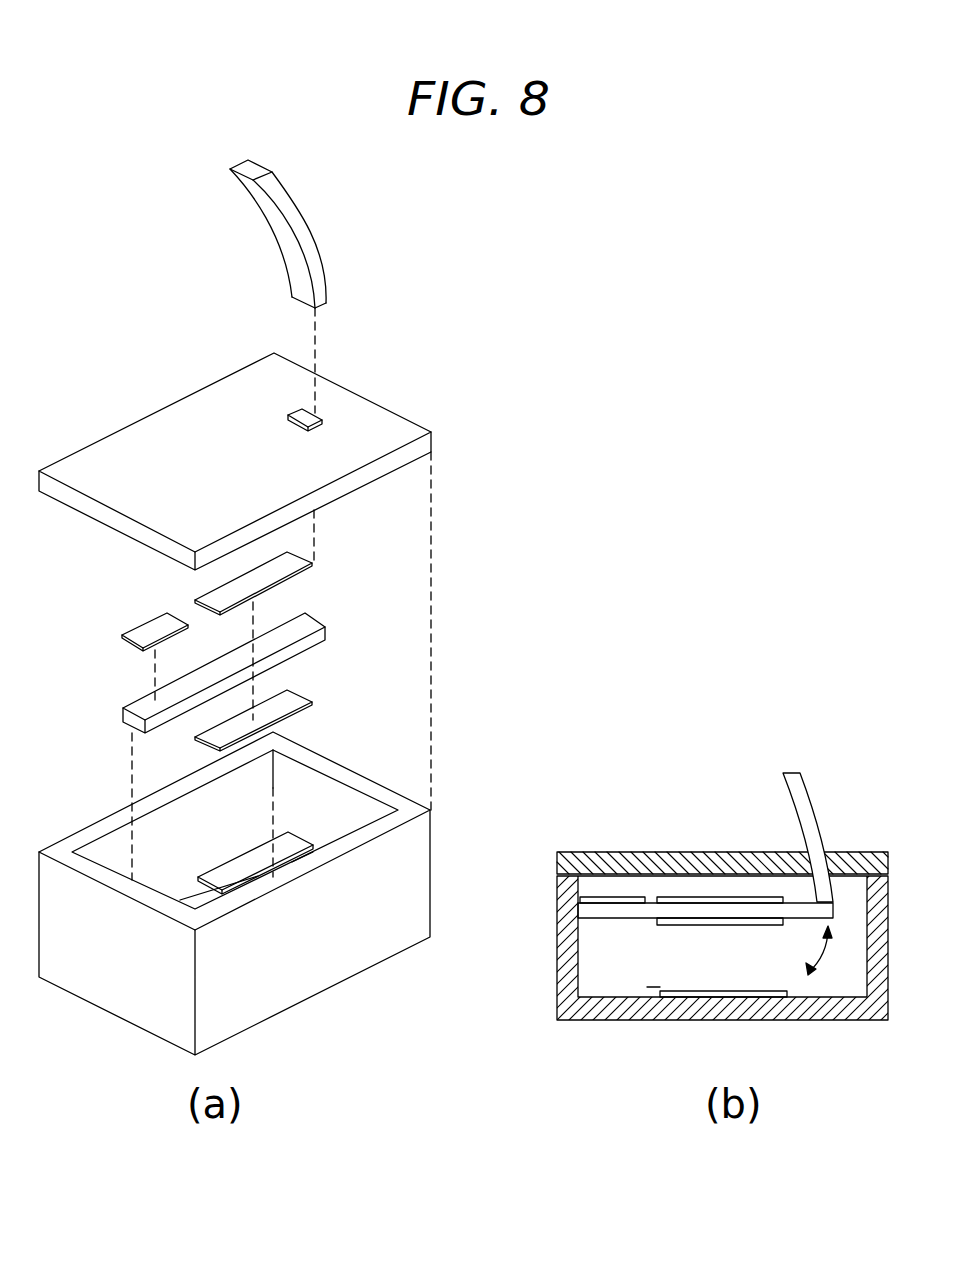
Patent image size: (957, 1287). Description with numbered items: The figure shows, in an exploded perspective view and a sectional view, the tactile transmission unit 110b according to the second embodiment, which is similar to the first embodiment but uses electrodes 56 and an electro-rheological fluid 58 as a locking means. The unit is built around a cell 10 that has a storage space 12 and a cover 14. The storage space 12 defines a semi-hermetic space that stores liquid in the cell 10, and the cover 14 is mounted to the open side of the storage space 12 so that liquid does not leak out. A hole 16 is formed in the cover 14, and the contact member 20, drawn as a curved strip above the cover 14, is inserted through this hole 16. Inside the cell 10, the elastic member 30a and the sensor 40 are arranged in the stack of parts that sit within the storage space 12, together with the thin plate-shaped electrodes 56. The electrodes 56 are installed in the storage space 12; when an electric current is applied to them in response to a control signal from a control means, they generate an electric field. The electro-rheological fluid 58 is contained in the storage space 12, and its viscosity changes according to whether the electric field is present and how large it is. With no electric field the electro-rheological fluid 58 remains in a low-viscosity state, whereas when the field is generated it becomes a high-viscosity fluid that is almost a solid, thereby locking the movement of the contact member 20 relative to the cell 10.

The tactile transmission unit 110b is at (143, 292).
The contact member 20 is at (307, 226).
The cover 14 is at (191, 442).
The hole 16 is at (307, 413).
The electrodes 56 is at (235, 866).
The sensor 40 is at (121, 638).
The elastic member 30a is at (121, 709).
The storage space 12 is at (295, 824).
The cell 10 is at (498, 876).
The electro-rheological fluid 58 is at (647, 987).